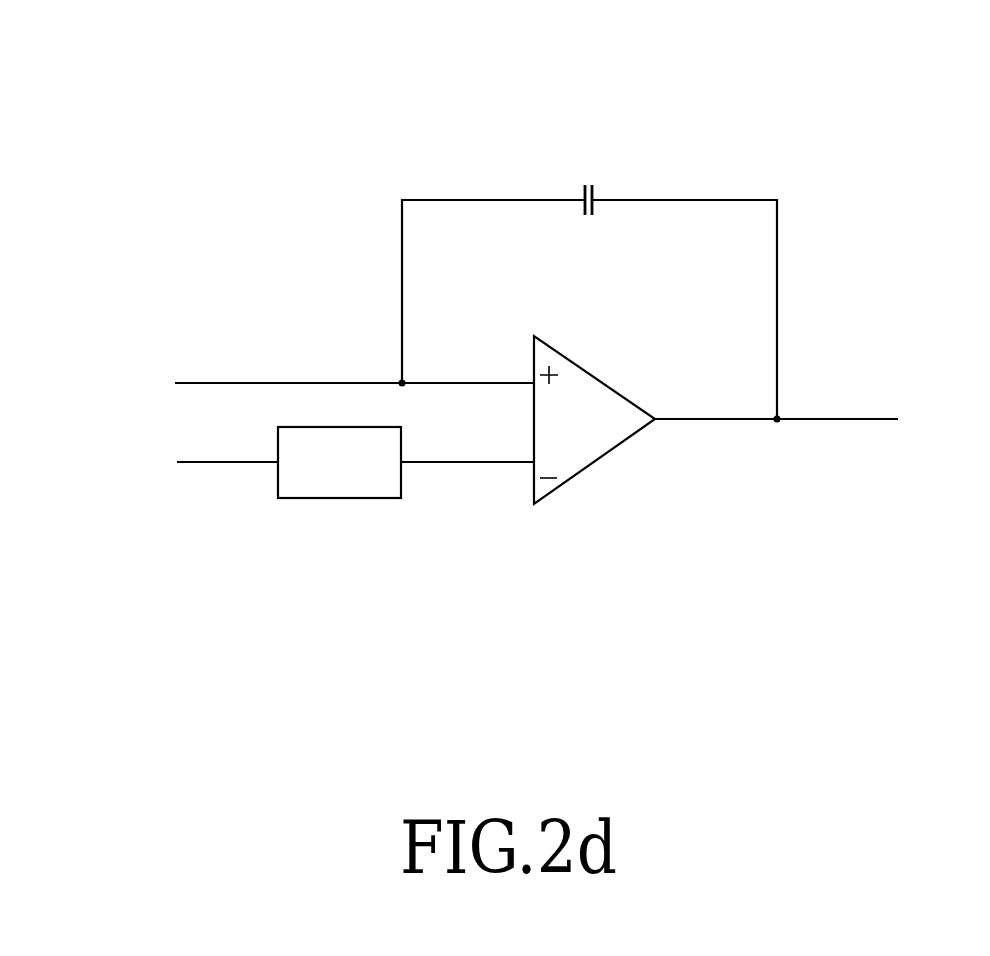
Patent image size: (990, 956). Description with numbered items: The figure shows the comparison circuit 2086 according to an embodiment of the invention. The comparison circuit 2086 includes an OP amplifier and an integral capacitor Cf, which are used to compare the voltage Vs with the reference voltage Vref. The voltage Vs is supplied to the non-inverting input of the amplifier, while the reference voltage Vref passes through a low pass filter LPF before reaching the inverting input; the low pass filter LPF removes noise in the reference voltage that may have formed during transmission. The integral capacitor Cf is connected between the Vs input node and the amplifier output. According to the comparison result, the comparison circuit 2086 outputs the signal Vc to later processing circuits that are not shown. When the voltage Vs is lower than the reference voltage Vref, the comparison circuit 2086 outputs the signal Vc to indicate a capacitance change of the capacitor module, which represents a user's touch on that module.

The comparison circuit 2086 is at (243, 111).
The integral capacitor cf is at (589, 277).
The voltage Vs is at (315, 377).
The reference voltage Vref is at (175, 461).
The low pass filter LPF is at (406, 462).
The signal Vc is at (802, 419).